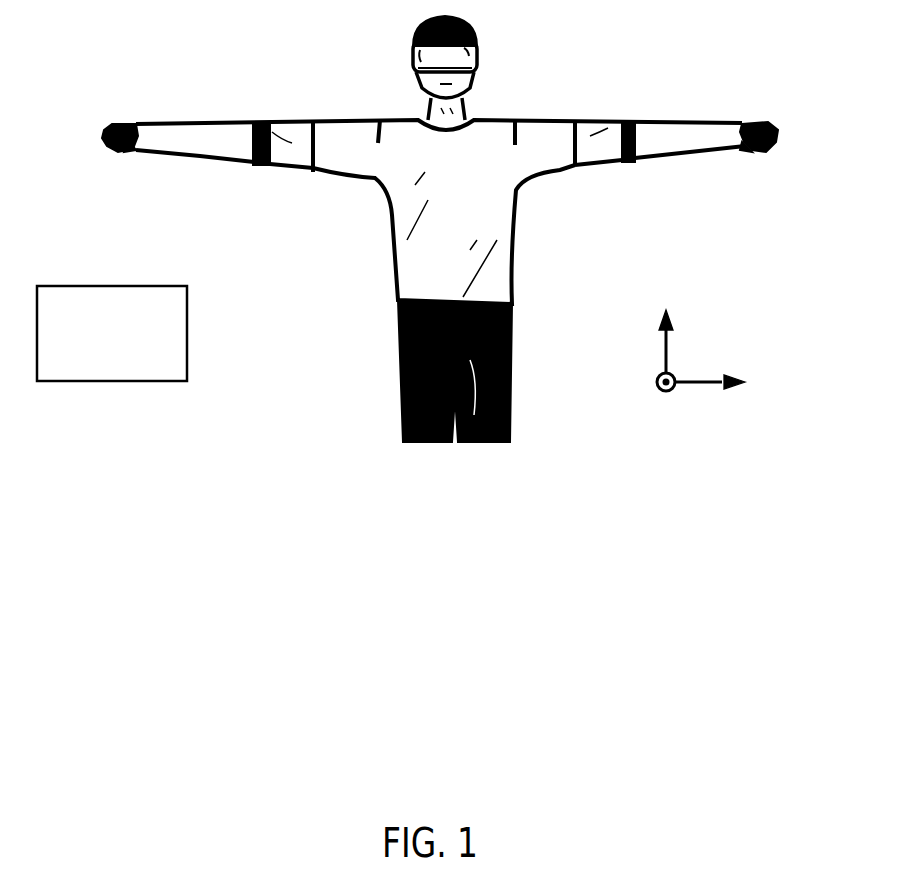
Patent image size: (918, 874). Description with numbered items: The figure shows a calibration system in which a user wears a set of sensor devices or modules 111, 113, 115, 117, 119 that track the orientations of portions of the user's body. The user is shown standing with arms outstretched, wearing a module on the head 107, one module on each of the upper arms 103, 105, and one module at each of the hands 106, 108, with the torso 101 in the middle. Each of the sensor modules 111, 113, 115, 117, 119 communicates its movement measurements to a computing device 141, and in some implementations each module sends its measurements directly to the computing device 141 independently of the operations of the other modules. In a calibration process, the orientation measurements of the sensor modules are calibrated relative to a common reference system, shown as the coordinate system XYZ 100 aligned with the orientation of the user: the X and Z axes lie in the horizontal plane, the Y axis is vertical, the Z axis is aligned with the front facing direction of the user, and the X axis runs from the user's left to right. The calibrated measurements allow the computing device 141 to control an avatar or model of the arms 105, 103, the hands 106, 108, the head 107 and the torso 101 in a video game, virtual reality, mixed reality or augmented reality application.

The coordinate system XYZ 100 is at (666, 352).
The torso 101 is at (514, 245).
The upper arm 103 is at (612, 166).
The upper arm 105 is at (279, 168).
The hand 106 is at (132, 122).
The head 107 is at (420, 38).
The hand 108 is at (750, 122).
The sensor module 111 is at (476, 62).
The sensor module 113 is at (628, 122).
The sensor module 115 is at (255, 122).
The sensor module 117 is at (130, 152).
The sensor module 119 is at (748, 150).
The computing device 141 is at (112, 333).